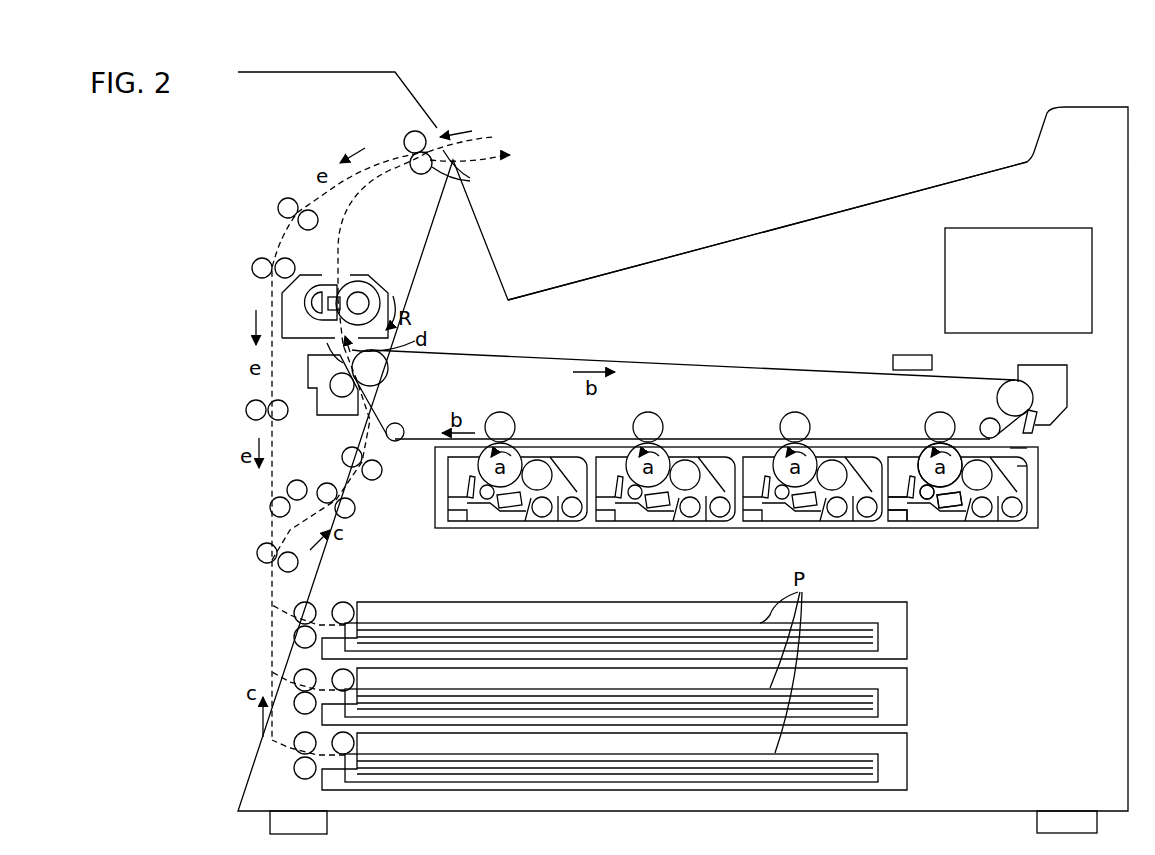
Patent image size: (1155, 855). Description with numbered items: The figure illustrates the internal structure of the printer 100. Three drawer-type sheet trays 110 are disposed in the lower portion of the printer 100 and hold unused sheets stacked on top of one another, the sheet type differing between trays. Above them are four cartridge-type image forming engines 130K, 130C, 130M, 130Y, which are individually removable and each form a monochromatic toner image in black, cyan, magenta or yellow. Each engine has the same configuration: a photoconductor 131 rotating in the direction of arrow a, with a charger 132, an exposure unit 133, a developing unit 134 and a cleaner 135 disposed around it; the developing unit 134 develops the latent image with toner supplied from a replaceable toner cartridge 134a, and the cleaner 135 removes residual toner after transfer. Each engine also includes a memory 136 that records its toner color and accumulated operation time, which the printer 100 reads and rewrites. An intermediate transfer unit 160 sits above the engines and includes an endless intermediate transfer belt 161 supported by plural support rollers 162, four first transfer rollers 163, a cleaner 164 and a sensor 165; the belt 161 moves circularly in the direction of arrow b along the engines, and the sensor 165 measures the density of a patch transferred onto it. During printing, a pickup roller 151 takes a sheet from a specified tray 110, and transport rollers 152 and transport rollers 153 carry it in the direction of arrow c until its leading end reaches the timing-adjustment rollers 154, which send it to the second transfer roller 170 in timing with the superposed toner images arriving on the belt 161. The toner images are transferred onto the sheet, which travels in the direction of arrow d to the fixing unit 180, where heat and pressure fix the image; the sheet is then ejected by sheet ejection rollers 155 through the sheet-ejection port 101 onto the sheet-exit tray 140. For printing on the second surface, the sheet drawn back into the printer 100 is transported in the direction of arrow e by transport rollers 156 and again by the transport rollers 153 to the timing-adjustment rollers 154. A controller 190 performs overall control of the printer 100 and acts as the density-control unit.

The printer 100 is at (893, 124).
The sheet-ejection port 101 is at (452, 122).
The sheet trays 110 is at (908, 631).
The image forming engine (black) 130K is at (600, 456).
The image forming engine (cyan) 130C is at (745, 456).
The image forming engine (magenta) 130M is at (882, 456).
The image forming engine (yellow) 130Y is at (1030, 478).
The photoconductor 131 is at (958, 455).
The charger 132 is at (950, 508).
The exposure unit 133 is at (930, 500).
The developing unit 134 is at (1010, 448).
The toner cartridge 134a is at (1023, 465).
The cleaner 135 is at (900, 468).
The memory 136 is at (898, 522).
The sheet-exit tray 140 is at (673, 252).
The pickup roller 151 is at (352, 735).
The transport rollers 152 is at (300, 637).
The transport rollers 153 is at (354, 506).
The timing-adjustment rollers 154 is at (380, 470).
The sheet ejection rollers 155 is at (470, 181).
The transport rollers 156 is at (308, 210).
The intermediate transfer unit 160 is at (731, 361).
The intermediate transfer belt 161 is at (695, 358).
The support rollers 162 is at (396, 423).
The first transfer rollers 163 is at (500, 414).
The cleaner 164 is at (1050, 410).
The sensor 165 is at (927, 360).
The second transfer roller 170 is at (340, 378).
The fixing unit 180 is at (365, 268).
The controller 190 is at (1055, 227).